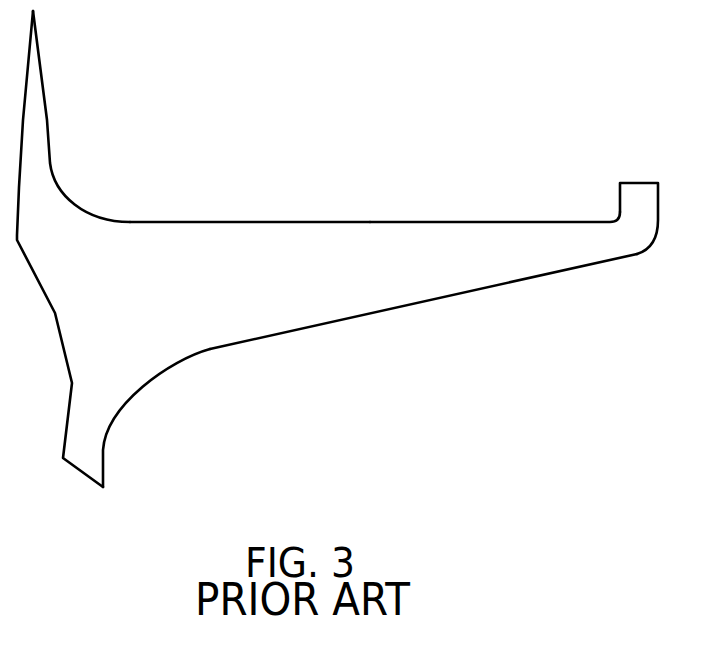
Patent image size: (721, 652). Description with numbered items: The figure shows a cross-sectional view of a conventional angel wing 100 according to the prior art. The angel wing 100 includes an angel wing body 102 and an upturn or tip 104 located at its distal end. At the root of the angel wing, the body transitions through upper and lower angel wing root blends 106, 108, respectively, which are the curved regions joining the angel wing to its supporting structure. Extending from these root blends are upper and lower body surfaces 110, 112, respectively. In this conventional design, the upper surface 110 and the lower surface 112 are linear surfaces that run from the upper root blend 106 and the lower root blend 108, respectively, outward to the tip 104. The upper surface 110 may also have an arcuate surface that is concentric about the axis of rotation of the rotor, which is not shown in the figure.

The angel wing 100 is at (349, 249).
The angel wing body 102 is at (297, 229).
The tip 104 is at (641, 190).
The upper angel wing root blend 106 is at (95, 212).
The lower angel wing root blend 108 is at (143, 385).
The upper body surface 110 is at (368, 222).
The lower body surface 112 is at (315, 330).